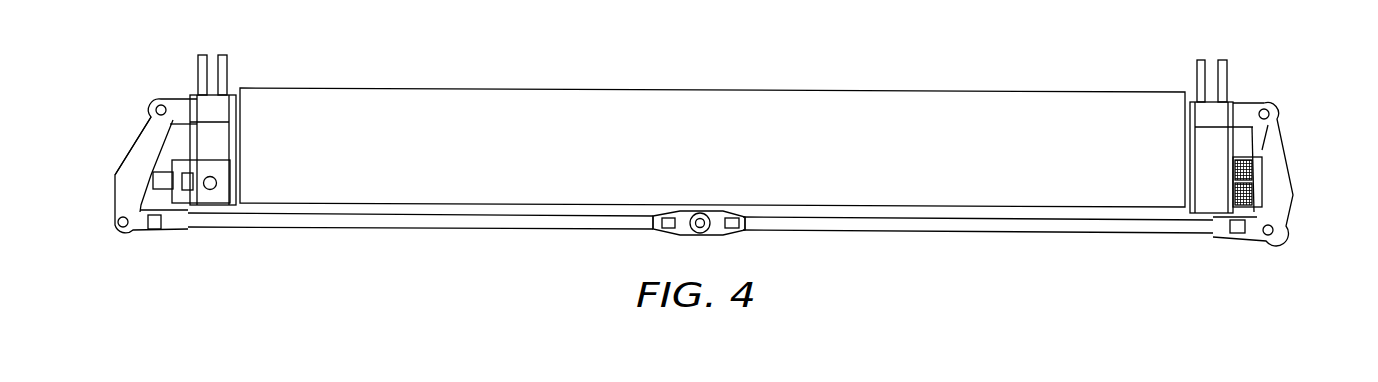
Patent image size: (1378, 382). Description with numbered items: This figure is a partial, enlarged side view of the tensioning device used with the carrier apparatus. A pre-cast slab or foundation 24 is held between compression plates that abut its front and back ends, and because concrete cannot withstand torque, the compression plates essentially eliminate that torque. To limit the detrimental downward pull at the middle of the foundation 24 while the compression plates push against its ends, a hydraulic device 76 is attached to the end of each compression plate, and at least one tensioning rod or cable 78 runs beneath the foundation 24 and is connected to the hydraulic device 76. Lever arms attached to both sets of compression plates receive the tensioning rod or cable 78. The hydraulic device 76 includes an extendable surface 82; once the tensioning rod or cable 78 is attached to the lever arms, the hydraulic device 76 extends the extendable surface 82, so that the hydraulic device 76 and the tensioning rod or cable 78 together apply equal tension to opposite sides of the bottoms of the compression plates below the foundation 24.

The pre-cast slab/foundation 24 is at (968, 92).
The hydraulic device 76 is at (207, 195).
The tensioning rod/cable 78 is at (355, 223).
The extendable surface 82 is at (157, 157).